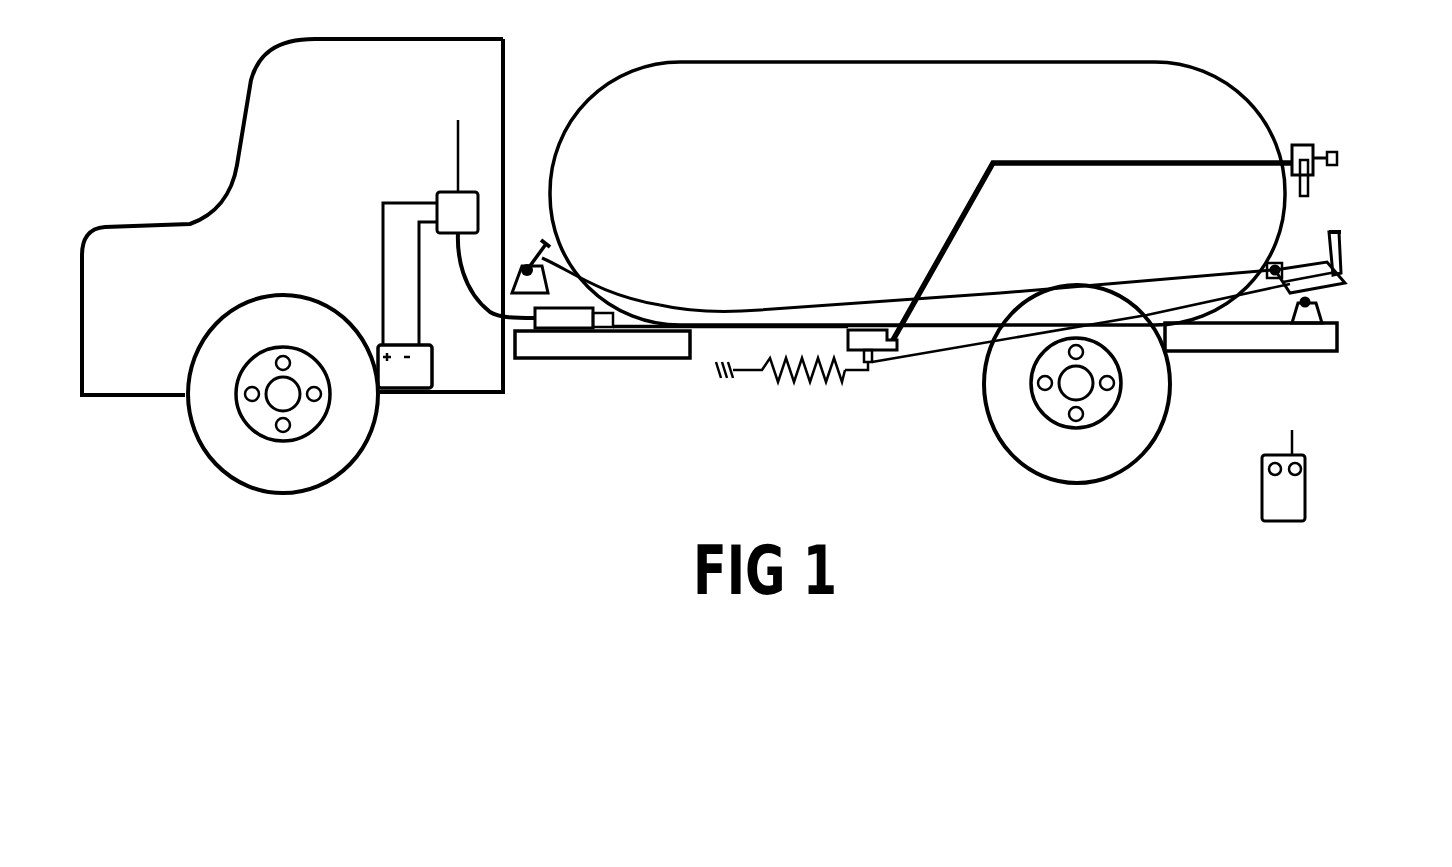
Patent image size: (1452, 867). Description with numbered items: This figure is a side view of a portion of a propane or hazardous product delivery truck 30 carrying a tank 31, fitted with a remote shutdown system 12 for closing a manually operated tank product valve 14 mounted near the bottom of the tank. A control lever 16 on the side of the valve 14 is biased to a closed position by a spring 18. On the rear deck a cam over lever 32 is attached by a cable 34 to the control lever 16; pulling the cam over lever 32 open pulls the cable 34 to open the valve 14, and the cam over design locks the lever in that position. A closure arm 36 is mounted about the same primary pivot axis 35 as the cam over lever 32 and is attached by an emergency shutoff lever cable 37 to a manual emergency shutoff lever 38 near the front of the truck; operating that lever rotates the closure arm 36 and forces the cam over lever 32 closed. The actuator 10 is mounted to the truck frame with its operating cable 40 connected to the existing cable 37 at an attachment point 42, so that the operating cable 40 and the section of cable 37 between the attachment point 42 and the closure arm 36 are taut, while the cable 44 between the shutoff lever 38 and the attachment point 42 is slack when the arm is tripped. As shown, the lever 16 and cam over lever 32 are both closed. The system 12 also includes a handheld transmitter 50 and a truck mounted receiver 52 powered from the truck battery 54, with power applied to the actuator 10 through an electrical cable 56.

The actuator 10 is at (565, 318).
The remote shutdown system 12 is at (632, 396).
The tank product valve 14 is at (860, 336).
The control lever 16 is at (871, 358).
The spring 18 is at (795, 382).
The delivery truck 30 is at (393, 174).
The tank 31 is at (697, 153).
The cam over lever 32 is at (1340, 238).
The cable 34 is at (1177, 305).
The primary pivot axis 35 is at (1310, 302).
The closure arm 36 is at (1277, 266).
The emergency shutoff lever cable 37 is at (997, 291).
The manual emergency shutoff lever 38 is at (536, 240).
The operating cable 40 is at (657, 313).
The attachment point 42 is at (789, 304).
The cable 44 is at (598, 287).
The handheld transmitter 50 is at (1290, 504).
The receiver 52 is at (465, 208).
The truck battery 54 is at (386, 370).
The electrical cable 56 is at (470, 300).